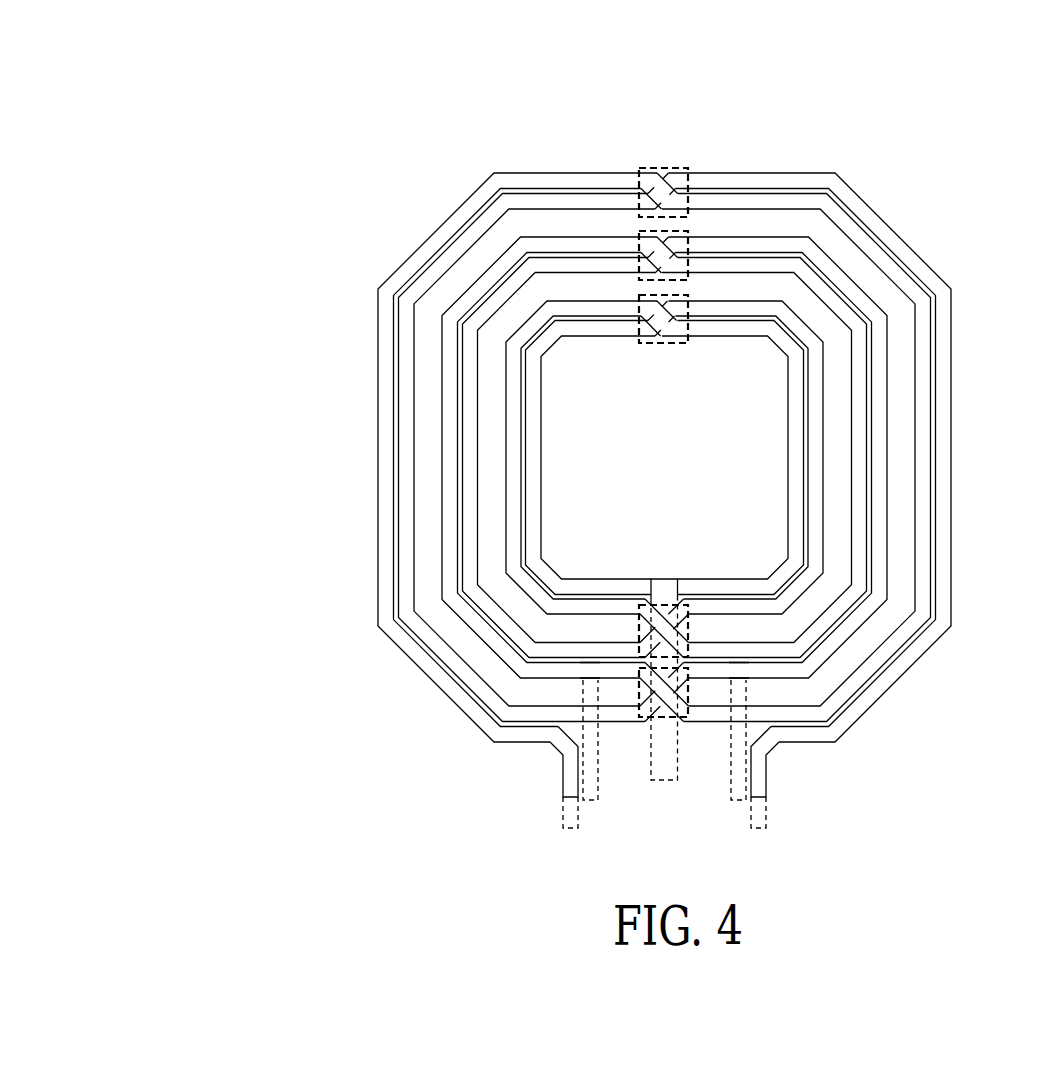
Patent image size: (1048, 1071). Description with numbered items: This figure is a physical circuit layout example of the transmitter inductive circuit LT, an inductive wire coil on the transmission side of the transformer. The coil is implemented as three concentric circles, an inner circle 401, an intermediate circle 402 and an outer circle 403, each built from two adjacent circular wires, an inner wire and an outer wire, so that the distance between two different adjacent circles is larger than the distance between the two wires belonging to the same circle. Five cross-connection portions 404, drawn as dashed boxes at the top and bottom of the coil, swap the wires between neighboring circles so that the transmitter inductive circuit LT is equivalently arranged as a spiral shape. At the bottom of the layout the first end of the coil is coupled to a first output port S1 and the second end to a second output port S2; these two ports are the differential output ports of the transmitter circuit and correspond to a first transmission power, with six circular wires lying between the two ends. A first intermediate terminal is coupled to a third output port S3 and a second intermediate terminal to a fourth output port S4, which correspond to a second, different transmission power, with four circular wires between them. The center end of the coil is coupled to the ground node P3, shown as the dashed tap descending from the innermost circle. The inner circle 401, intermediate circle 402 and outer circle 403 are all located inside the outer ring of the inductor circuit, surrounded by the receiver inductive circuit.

The transmitter inductive circuit LT is at (140, 100).
The inner circle 401 is at (817, 435).
The intermediate circle 402 is at (857, 378).
The outer circle 403 is at (922, 488).
The cross-connection portions 404 is at (640, 297).
The ground node P3 is at (664, 697).
The first output port S1 is at (758, 832).
The second output port S2 is at (570, 832).
The third output port S3 is at (728, 759).
The fourth output port S4 is at (600, 759).